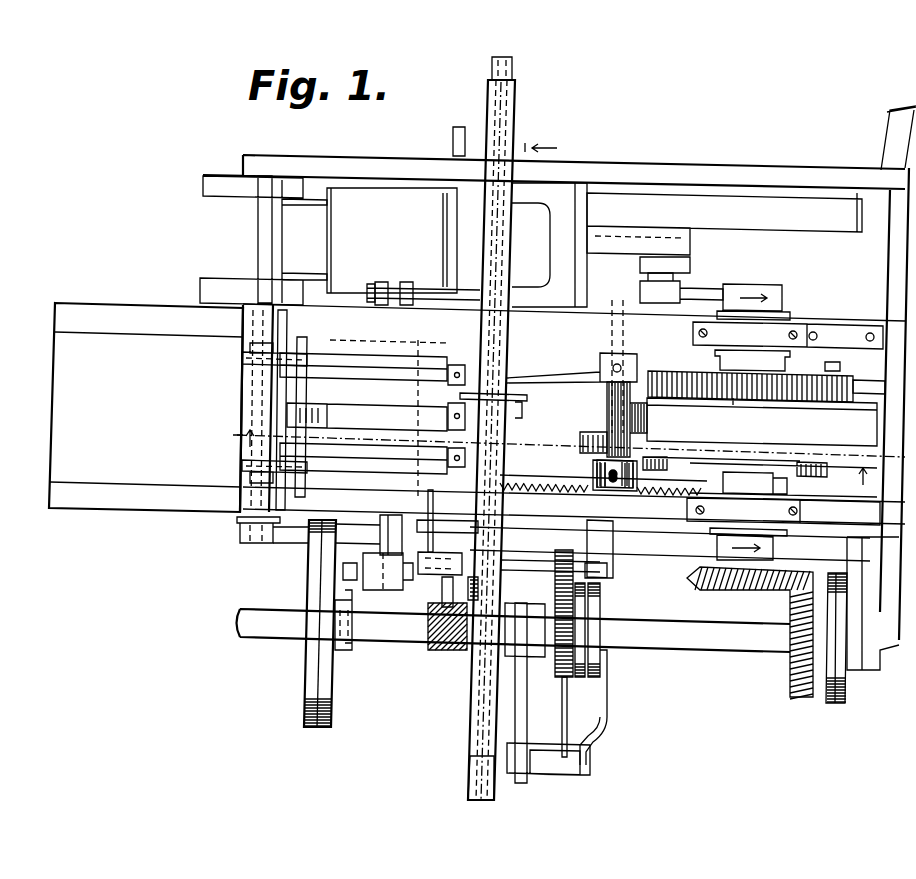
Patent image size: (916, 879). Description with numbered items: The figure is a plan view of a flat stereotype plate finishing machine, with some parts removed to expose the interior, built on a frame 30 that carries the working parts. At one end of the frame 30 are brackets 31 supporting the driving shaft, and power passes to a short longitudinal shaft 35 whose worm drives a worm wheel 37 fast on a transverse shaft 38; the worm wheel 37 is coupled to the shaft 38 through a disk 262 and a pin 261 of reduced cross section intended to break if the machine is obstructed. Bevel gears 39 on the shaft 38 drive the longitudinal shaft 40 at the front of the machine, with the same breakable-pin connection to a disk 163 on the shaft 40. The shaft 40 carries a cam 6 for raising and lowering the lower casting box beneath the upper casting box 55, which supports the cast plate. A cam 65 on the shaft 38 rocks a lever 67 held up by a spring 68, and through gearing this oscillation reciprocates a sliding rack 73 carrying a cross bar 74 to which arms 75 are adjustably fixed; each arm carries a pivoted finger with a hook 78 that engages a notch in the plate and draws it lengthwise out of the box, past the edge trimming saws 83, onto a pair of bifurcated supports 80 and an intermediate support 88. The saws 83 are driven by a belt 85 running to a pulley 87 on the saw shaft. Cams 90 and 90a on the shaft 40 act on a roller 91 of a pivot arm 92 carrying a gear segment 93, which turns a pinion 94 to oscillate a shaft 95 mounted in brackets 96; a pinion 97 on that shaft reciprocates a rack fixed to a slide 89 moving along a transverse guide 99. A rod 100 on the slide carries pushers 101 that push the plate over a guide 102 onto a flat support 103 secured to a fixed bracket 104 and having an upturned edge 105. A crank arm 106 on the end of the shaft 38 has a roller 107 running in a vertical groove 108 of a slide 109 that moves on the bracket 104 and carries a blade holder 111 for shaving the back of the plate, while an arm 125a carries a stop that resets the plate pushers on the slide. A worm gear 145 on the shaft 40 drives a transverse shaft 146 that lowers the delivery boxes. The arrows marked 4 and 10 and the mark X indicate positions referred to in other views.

The frame 30 is at (897, 270).
The brackets 31 is at (903, 168).
The blade holder 111 is at (262, 222).
The flat support 103 is at (368, 200).
The upturned edge 105 is at (453, 197).
The transverse shaft 146 is at (462, 122).
The rod 100 is at (435, 295).
The pushers 101 is at (405, 284).
The guide 102 is at (340, 317).
The transverse guide 99 is at (512, 64).
The slide 89 is at (515, 92).
The direction arrow 10 is at (538, 322).
The slide 109 is at (562, 193).
The fixed bracket 104 is at (587, 203).
The roller 107 is at (673, 268).
The vertical groove 108 is at (637, 268).
The crank arm 106 is at (707, 287).
The disk 262 is at (798, 353).
The pin 261 is at (837, 353).
The sliding rack 73 is at (750, 401).
The transverse shaft 38 is at (757, 400).
The worm wheel 37 is at (822, 398).
The short longitudinal shaft 35 is at (872, 382).
The arms 75 is at (560, 376).
The cross bar 74 is at (608, 397).
The arm 125a is at (520, 400).
The cam 65 is at (708, 467).
The spring 68 is at (562, 487).
The lever 67 is at (685, 487).
The section line 4 is at (559, 456).
The upper casting box 55 is at (146, 407).
The edge trimming saws 83 is at (281, 347).
The supports 80 is at (355, 380).
The support 88 is at (402, 413).
The hook 78 is at (438, 382).
The brackets 96 is at (427, 530).
The reference mark X is at (413, 425).
The pulley 87 is at (263, 543).
The belt 85 is at (299, 538).
The cam 6 is at (332, 723).
The longitudinal shaft 40 is at (730, 642).
The gear or pinion 97 is at (443, 587).
The worm gear 145 is at (448, 637).
The gear segment 93 is at (597, 603).
The pinion 94 is at (564, 604).
The shaft 95 is at (613, 552).
The cam 90a is at (595, 633).
The cam 90 is at (580, 677).
The roller 91 is at (600, 710).
The pivot arm 92 is at (593, 727).
The bevel gears 39 is at (793, 610).
The disk 163 is at (843, 703).